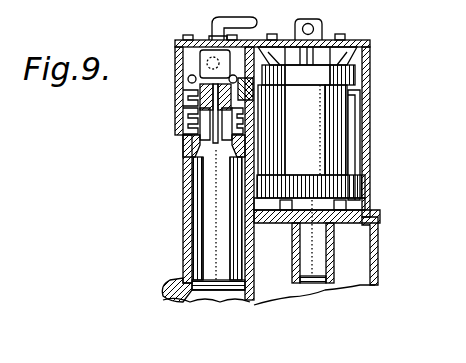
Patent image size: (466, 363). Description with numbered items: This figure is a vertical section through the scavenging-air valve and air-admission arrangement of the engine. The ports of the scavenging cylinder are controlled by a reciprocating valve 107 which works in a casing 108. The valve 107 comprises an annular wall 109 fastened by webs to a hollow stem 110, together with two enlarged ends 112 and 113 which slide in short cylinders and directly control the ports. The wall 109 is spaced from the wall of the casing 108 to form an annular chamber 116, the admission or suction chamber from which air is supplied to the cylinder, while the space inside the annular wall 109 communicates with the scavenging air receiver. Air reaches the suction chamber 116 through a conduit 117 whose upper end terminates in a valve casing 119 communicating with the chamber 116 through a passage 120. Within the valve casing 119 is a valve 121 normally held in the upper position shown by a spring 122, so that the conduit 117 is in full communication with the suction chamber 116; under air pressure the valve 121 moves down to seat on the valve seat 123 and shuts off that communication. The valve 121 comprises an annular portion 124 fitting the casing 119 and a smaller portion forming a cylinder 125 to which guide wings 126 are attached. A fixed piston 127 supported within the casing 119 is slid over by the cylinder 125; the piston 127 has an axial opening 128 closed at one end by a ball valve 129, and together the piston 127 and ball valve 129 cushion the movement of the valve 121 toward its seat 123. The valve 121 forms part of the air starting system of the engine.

The reciprocating valve 107 is at (350, 155).
The casing 108 is at (370, 82).
The annular wall 109 is at (352, 118).
The hollow stem 110 is at (248, 10).
The enlarged end 112 is at (370, 56).
The enlarged end 113 is at (368, 200).
The annular chamber 116 is at (350, 130).
The conduit 117 is at (190, 227).
The valve casing 119 is at (177, 113).
The passage 120 is at (262, 118).
The valve 121 is at (177, 89).
The spring 122 is at (182, 128).
The valve seat 123 is at (185, 137).
The annular portion 124 is at (178, 97).
The cylinder 125 is at (200, 62).
The guide wings 126 is at (187, 50).
The fixed piston 127 is at (223, 153).
The axial opening 128 is at (188, 166).
The ball valve 129 is at (188, 80).